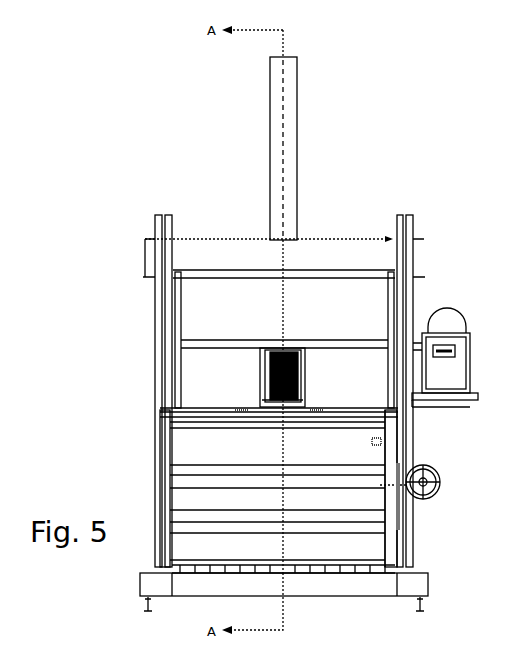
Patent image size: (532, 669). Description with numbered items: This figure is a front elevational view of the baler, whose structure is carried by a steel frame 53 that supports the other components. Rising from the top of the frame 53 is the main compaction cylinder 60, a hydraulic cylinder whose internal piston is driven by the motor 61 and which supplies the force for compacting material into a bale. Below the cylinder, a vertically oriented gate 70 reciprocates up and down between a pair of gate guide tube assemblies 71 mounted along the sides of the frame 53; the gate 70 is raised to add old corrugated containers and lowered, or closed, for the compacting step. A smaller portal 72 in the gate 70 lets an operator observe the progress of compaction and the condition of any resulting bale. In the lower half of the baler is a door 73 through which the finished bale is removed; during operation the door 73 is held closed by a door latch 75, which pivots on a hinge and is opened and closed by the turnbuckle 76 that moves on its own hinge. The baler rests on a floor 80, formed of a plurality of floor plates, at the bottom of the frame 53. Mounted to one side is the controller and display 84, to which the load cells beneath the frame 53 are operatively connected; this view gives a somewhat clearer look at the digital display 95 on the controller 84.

The frame 53 is at (245, 236).
The main compaction cylinder 60 is at (297, 143).
The motor 61 is at (441, 333).
The gate 70 is at (346, 317).
The gate guide tube assemblies 71 is at (160, 362).
The portal 72 is at (298, 392).
The door 73 is at (266, 453).
The door latch 75 is at (392, 517).
The turnbuckle 76 is at (437, 490).
The floor 80 is at (303, 597).
The controller and display 84 is at (463, 404).
The digital display 95 is at (455, 352).